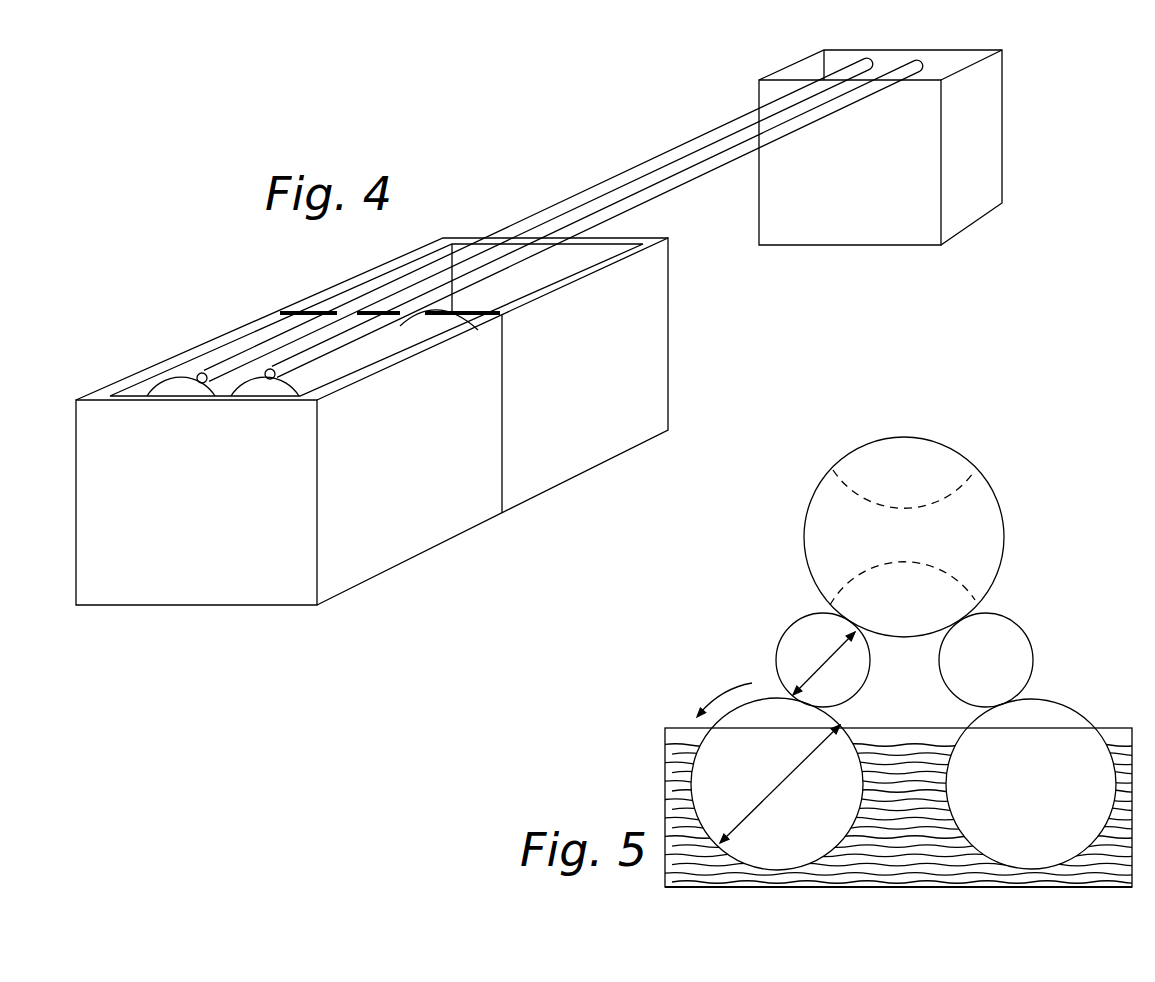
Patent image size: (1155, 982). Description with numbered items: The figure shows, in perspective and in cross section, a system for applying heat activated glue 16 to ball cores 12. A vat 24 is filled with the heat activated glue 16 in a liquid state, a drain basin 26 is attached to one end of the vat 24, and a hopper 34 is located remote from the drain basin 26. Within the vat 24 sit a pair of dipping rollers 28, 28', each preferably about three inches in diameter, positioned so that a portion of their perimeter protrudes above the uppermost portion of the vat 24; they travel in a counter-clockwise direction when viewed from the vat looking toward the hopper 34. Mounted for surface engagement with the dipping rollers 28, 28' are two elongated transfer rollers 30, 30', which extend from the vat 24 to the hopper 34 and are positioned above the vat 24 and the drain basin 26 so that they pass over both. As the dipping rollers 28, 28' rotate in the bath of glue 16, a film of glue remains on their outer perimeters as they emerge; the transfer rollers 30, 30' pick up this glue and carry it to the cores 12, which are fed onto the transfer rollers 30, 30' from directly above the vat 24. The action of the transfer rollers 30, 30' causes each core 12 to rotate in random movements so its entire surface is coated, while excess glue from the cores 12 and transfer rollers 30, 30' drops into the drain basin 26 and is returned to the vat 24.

In FIG. 5, the core 12 is at (906, 544).
In FIG. 5, the glue 16 is at (878, 752).
In FIG. 4, the vat 24 is at (405, 475).
In FIG. 5, the vat 24 is at (1030, 887).
In FIG. 4, the drain basin 26 is at (584, 381).
In FIG. 4, the dipping roller 28 is at (171, 347).
In FIG. 5, the dipping roller 28 is at (777, 776).
In FIG. 4, the dipping roller 28' is at (249, 339).
In FIG. 5, the dipping roller 28' is at (1031, 784).
In FIG. 4, the transfer roller 30 is at (535, 220).
In FIG. 5, the transfer roller 30 is at (793, 659).
In FIG. 4, the transfer roller 30' is at (594, 219).
In FIG. 5, the transfer roller 30' is at (1019, 660).
In FIG. 4, the hopper 34 is at (826, 210).